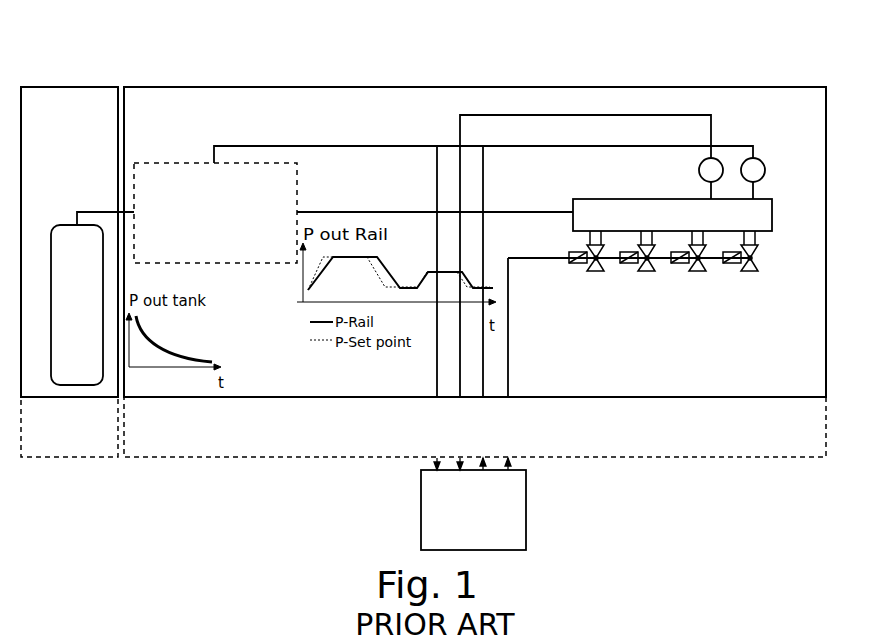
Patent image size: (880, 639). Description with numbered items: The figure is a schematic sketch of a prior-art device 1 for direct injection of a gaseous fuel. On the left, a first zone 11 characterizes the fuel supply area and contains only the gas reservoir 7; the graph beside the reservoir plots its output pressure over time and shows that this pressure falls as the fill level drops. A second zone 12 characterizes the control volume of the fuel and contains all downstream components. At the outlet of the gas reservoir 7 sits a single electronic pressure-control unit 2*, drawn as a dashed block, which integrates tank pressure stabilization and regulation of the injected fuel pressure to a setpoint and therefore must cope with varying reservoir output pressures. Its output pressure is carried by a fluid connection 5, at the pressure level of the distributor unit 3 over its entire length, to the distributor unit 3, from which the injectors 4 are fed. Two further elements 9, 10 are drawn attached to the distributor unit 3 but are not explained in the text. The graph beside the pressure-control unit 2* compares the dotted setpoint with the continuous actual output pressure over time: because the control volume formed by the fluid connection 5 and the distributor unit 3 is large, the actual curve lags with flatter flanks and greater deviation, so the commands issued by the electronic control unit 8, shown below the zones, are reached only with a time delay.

The device 1 is at (394, 130).
The pressure-control unit 2 is at (182, 163).
The distributor unit 3 is at (769, 238).
The injector 4 is at (602, 267).
The fluid connection 5 is at (514, 212).
The gas reservoir 7 is at (69, 223).
The electronic control unit 8 is at (527, 506).
The temperature sensor 9 is at (722, 158).
The pressure sensor 10 is at (757, 158).
The first zone 11 is at (103, 97).
The second zone 12 is at (760, 458).